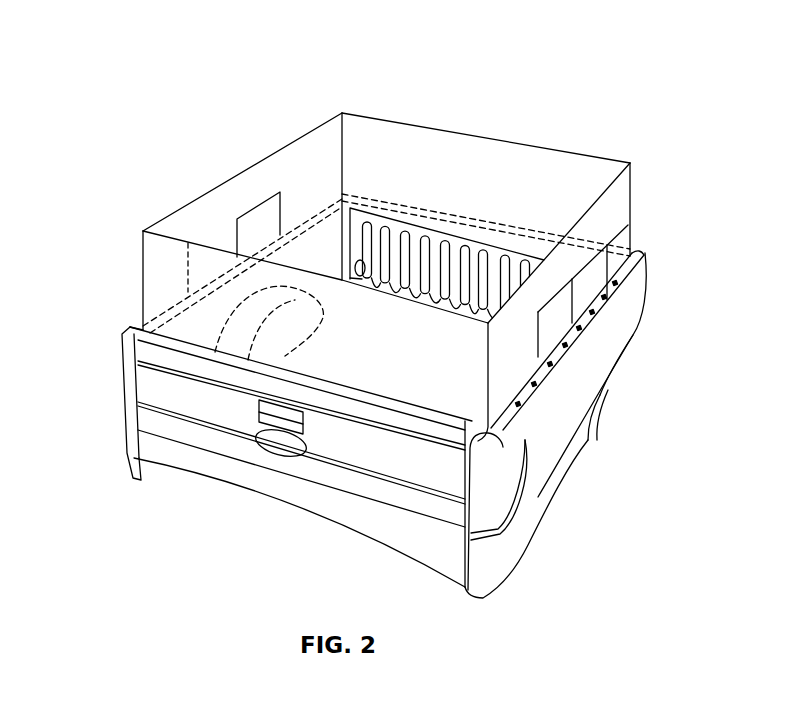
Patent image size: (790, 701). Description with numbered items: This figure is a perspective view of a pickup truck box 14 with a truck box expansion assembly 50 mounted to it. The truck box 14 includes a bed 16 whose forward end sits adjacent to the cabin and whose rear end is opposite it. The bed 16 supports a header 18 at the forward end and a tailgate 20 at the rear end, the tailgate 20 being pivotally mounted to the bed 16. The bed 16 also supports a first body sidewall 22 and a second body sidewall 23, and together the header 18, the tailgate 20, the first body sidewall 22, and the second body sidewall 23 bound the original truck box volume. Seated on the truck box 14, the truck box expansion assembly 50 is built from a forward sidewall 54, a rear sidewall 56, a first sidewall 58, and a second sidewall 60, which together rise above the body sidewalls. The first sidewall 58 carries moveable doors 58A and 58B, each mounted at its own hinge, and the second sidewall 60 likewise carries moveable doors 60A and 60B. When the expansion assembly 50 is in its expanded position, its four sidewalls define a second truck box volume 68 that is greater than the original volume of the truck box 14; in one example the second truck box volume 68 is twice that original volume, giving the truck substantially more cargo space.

The truck box 14 is at (385, 424).
The bed 16 is at (477, 197).
The header 18 is at (472, 247).
The tailgate 20 is at (285, 492).
The first body sidewall 22 is at (533, 508).
The second body sidewall 23 is at (325, 222).
The truck box expansion assembly 50 is at (268, 140).
The forward sidewall 54 is at (447, 139).
The rear sidewall 56 is at (154, 301).
The first sidewall 58 is at (600, 302).
The moveable door 58A is at (547, 330).
The moveable door 58B is at (583, 285).
The second sidewall 60 is at (230, 201).
The moveable door 60A is at (221, 248).
The moveable door 60B is at (253, 230).
The second truck box volume 68 is at (389, 148).